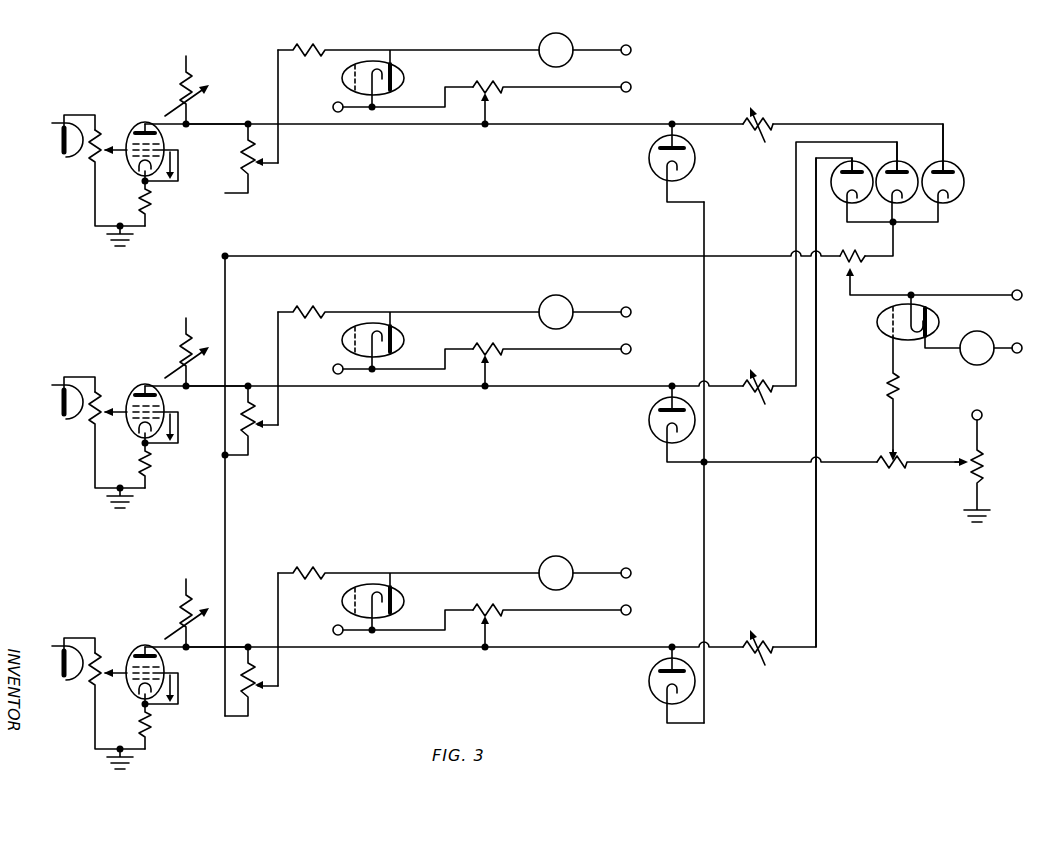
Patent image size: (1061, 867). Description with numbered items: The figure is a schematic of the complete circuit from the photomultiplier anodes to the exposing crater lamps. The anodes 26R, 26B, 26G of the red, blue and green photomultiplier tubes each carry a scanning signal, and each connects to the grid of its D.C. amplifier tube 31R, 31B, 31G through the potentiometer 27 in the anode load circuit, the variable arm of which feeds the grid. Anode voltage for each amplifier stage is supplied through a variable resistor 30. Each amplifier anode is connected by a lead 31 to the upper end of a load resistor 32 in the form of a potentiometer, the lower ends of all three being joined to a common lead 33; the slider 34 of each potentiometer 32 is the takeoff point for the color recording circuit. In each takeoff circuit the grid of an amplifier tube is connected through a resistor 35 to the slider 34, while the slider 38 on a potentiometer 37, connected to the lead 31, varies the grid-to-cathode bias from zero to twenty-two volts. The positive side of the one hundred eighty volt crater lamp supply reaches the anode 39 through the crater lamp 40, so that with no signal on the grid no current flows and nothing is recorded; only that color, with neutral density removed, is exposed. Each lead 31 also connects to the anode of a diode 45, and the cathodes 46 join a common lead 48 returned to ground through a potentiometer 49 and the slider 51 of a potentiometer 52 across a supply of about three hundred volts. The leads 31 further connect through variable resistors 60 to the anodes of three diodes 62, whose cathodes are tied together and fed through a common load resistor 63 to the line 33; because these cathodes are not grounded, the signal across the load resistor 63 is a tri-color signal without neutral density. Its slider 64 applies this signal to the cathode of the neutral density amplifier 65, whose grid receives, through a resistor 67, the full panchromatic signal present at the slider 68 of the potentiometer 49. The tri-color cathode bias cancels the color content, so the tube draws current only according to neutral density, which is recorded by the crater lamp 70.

The anode 26R is at (64, 158).
The anode 26B is at (64, 420).
The anode 26G is at (64, 681).
The potentiometer 27 is at (101, 136).
The variable resistor 30 is at (194, 85).
The amplifier tube 31R is at (140, 124).
The amplifier tube 31B is at (140, 386).
The amplifier tube 31G is at (140, 647).
The lead 31 is at (205, 125).
The load resistor 32 is at (240, 165).
The common lead 33 is at (230, 238).
The slider 34 is at (266, 170).
The resistor 35 is at (310, 49).
The potentiometer 37 is at (497, 85).
The slider 38 is at (490, 111).
The anode 39 is at (395, 70).
The crater lamp 40 is at (568, 38).
The diode 45 is at (686, 150).
The cathode 46 is at (664, 172).
The common lead 48 is at (707, 216).
The potentiometer 49 is at (882, 472).
The slider 51 is at (934, 460).
The potentiometer 52 is at (985, 468).
The variable resistor 60 is at (772, 119).
The diode 62 is at (964, 182).
The load resistor 63 is at (848, 252).
The slider 64 is at (856, 290).
The neutral density amplifier 65 is at (940, 309).
The resistor 67 is at (905, 391).
The slider 68 is at (898, 443).
The crater lamp 70 is at (990, 337).